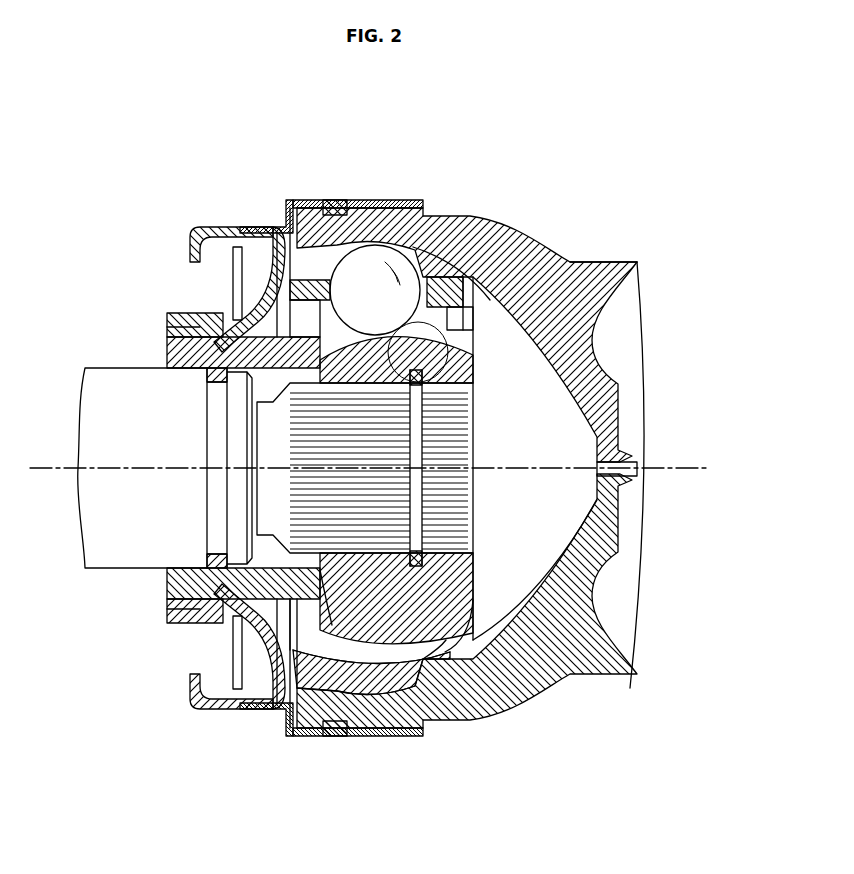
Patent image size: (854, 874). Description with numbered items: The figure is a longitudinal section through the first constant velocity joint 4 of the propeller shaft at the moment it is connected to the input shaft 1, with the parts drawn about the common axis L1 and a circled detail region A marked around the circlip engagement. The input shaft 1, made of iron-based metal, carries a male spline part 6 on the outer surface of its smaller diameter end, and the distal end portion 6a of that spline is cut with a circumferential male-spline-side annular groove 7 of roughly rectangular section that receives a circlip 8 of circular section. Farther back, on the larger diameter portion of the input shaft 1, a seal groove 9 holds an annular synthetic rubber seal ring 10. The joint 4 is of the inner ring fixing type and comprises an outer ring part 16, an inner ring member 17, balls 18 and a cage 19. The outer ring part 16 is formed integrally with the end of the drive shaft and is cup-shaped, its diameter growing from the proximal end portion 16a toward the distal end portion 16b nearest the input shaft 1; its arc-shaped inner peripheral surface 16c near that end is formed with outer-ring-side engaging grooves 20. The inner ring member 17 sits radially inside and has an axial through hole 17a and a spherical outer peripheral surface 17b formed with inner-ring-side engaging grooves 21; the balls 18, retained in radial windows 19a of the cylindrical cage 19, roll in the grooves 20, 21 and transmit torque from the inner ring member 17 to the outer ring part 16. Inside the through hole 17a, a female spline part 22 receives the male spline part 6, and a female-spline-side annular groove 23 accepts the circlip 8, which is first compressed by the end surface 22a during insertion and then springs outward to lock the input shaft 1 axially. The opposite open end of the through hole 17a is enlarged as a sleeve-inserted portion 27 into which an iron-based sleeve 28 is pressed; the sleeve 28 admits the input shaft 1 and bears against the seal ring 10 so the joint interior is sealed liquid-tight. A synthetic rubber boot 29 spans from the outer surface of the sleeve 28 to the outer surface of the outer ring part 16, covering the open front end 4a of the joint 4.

The input shaft 1 is at (106, 362).
The first constant velocity joint 4 is at (590, 210).
The open front end 4a is at (283, 272).
The male spline part 6 is at (376, 662).
The distal end portion 6a is at (500, 680).
The male-spline-side annular groove 7 is at (447, 652).
The circlip 8 is at (446, 642).
The seal groove 9 is at (217, 522).
The seal ring 10 is at (190, 312).
The outer ring part 16 is at (473, 292).
The proximal end portion 16a is at (600, 268).
The distal end portion 16b is at (312, 200).
The inner peripheral surface 16c is at (327, 740).
The inner ring member 17 is at (470, 626).
The through hole 17a is at (513, 292).
The outer peripheral surface 17b is at (300, 743).
The balls 18 is at (376, 268).
The cage 19 is at (440, 280).
The windows 19a is at (330, 282).
The outer-ring-side engaging grooves 20 is at (452, 298).
The inner-ring-side engaging grooves 21 is at (460, 265).
The female spline part 22 is at (474, 582).
The end surface 22a is at (332, 590).
The female-spline-side annular groove 23 is at (410, 372).
The sleeve-inserted portion 27 is at (291, 600).
The sleeve 28 is at (237, 618).
The boot 29 is at (201, 220).
The detail region A is at (422, 344).
The axis line L1 is at (655, 472).